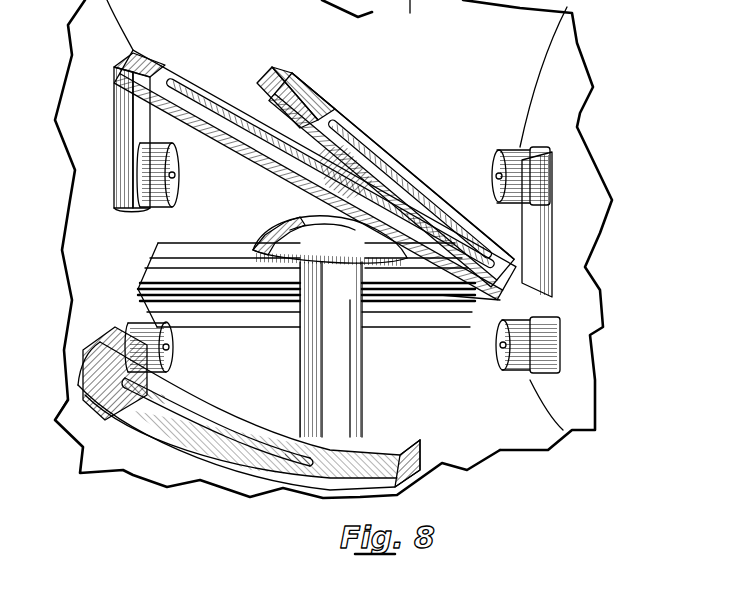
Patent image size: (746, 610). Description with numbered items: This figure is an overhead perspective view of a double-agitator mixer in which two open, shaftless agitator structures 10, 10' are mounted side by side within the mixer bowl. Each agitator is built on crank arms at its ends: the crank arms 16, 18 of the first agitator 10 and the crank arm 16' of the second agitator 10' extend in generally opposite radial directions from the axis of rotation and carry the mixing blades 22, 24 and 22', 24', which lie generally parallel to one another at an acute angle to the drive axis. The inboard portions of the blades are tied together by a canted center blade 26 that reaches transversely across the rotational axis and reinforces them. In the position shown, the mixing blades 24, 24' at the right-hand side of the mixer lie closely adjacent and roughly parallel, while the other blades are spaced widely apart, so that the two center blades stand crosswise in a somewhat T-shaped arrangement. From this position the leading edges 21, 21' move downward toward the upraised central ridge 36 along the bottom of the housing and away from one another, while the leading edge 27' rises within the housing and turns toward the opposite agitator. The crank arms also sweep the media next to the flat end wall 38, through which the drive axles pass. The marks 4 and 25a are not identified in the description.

The sheet material 4 is at (82, 229).
The end wall 38 is at (572, 80).
The agitator structure 10 is at (385, 169).
The agitator structure 10' is at (397, 368).
The crank arm 16 is at (100, 132).
The crank arm 16' is at (89, 368).
The crank arm 18 is at (545, 248).
The leading edge 21 is at (330, 173).
The leading edge 21' is at (200, 447).
The mixing blade 22 is at (315, 200).
The mixing blade 22' is at (249, 429).
The mixing blade 24 is at (403, 166).
The mixing blade 24' is at (464, 333).
The end face of arm 10 25a is at (317, 141).
The center blade 26 is at (352, 314).
The leading edge 27' is at (309, 239).
The ridge 36 is at (213, 283).